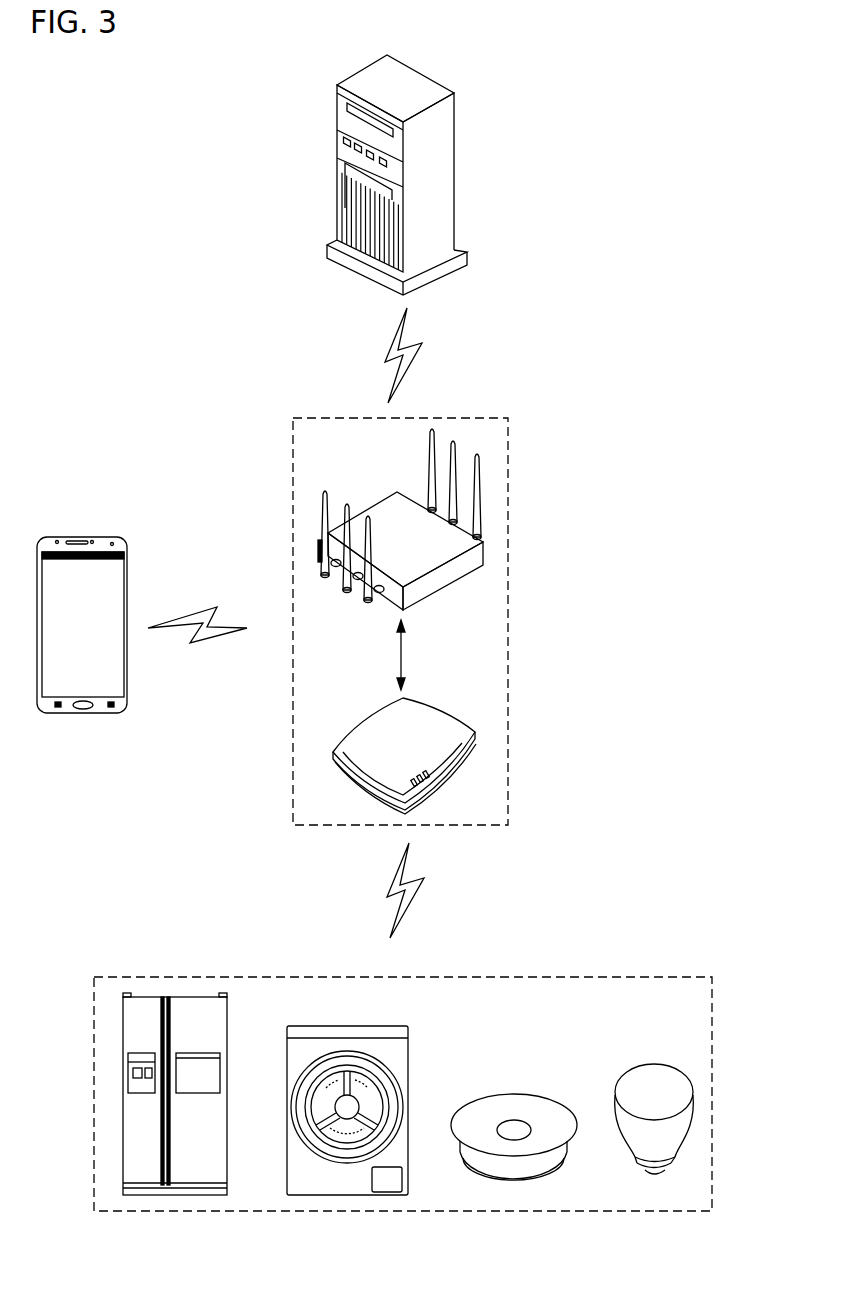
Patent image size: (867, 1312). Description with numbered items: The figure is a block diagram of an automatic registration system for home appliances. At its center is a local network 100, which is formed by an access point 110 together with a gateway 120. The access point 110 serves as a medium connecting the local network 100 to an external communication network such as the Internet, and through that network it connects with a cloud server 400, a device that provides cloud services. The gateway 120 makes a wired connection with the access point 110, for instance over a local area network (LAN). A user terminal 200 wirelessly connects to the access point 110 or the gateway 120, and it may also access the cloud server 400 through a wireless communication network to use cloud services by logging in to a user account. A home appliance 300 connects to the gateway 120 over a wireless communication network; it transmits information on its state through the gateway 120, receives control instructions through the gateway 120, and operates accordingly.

The local network 100 is at (472, 418).
The access point 110 is at (488, 556).
The gateway 120 is at (480, 735).
The user terminal 200 is at (66, 537).
The home appliance 300 is at (632, 977).
The cloud server 400 is at (454, 170).